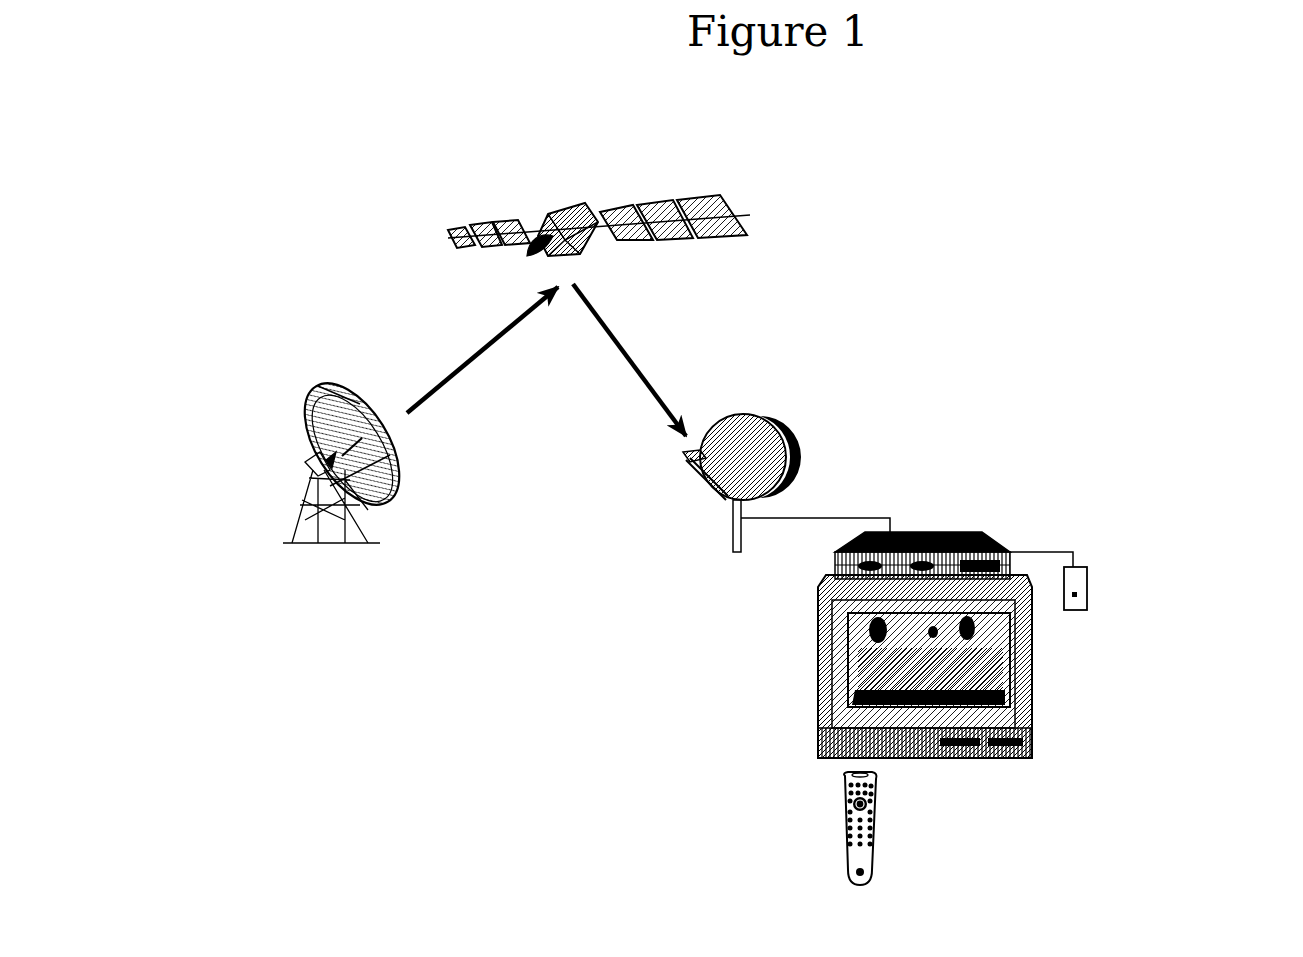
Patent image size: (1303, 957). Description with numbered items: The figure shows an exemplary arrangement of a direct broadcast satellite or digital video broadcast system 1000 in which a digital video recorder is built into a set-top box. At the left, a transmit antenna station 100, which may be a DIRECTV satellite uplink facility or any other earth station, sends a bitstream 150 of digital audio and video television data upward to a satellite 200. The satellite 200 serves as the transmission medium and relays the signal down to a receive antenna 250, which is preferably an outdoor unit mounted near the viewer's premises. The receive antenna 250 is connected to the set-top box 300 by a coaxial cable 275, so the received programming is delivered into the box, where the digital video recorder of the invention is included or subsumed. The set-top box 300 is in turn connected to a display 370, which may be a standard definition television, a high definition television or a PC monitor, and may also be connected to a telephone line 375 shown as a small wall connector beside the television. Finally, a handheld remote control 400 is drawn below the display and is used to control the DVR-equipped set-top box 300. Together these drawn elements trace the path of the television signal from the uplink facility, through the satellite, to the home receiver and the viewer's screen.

The system 1000 is at (1108, 275).
The transmit antenna station 100 is at (297, 543).
The bitstream 150 is at (473, 350).
The satellite 200 is at (746, 222).
The receive antenna 250 is at (717, 500).
The coaxial cable 275 is at (815, 518).
The set-top box 300 is at (960, 532).
The display 370 is at (1032, 752).
The telephone line 375 is at (1088, 597).
The remote control 400 is at (845, 840).